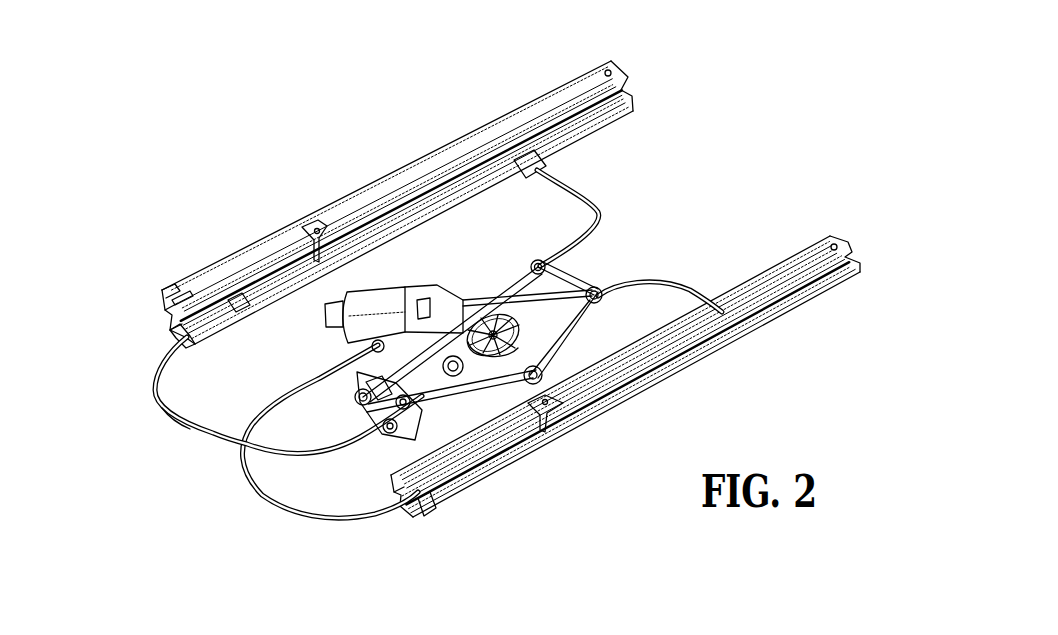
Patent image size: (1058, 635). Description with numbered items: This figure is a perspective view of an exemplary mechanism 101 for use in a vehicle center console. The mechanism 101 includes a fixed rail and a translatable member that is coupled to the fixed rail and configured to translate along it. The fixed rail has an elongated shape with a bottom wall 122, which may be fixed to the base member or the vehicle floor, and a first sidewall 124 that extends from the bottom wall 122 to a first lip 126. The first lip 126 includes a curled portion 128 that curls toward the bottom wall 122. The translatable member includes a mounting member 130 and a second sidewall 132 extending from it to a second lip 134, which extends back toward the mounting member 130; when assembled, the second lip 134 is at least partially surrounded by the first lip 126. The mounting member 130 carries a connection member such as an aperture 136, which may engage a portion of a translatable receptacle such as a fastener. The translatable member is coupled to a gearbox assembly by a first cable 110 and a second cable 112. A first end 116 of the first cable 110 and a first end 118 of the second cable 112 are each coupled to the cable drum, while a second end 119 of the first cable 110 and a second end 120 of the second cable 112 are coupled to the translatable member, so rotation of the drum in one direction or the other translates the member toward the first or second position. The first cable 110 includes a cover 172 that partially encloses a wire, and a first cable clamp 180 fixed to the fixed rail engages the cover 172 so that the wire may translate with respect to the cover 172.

The mechanism 101 is at (228, 112).
The first cable 110 is at (173, 420).
The second cable 112 is at (599, 194).
The first end of the first cable 116 is at (403, 433).
The first end of the second cable 118 is at (540, 260).
The second end of the first cable 119 is at (240, 300).
The second end of the second cable 120 is at (544, 168).
The bottom wall 122 is at (153, 381).
The first sidewall 124 is at (163, 313).
The first lip 126 is at (187, 290).
The curled portion 128 is at (162, 290).
The mounting member 130 is at (406, 180).
The second sidewall 132 is at (631, 104).
The second lip 134 is at (292, 228).
The aperture 136 is at (617, 70).
The cover 172 is at (217, 432).
The first cable clamp 180 is at (172, 323).